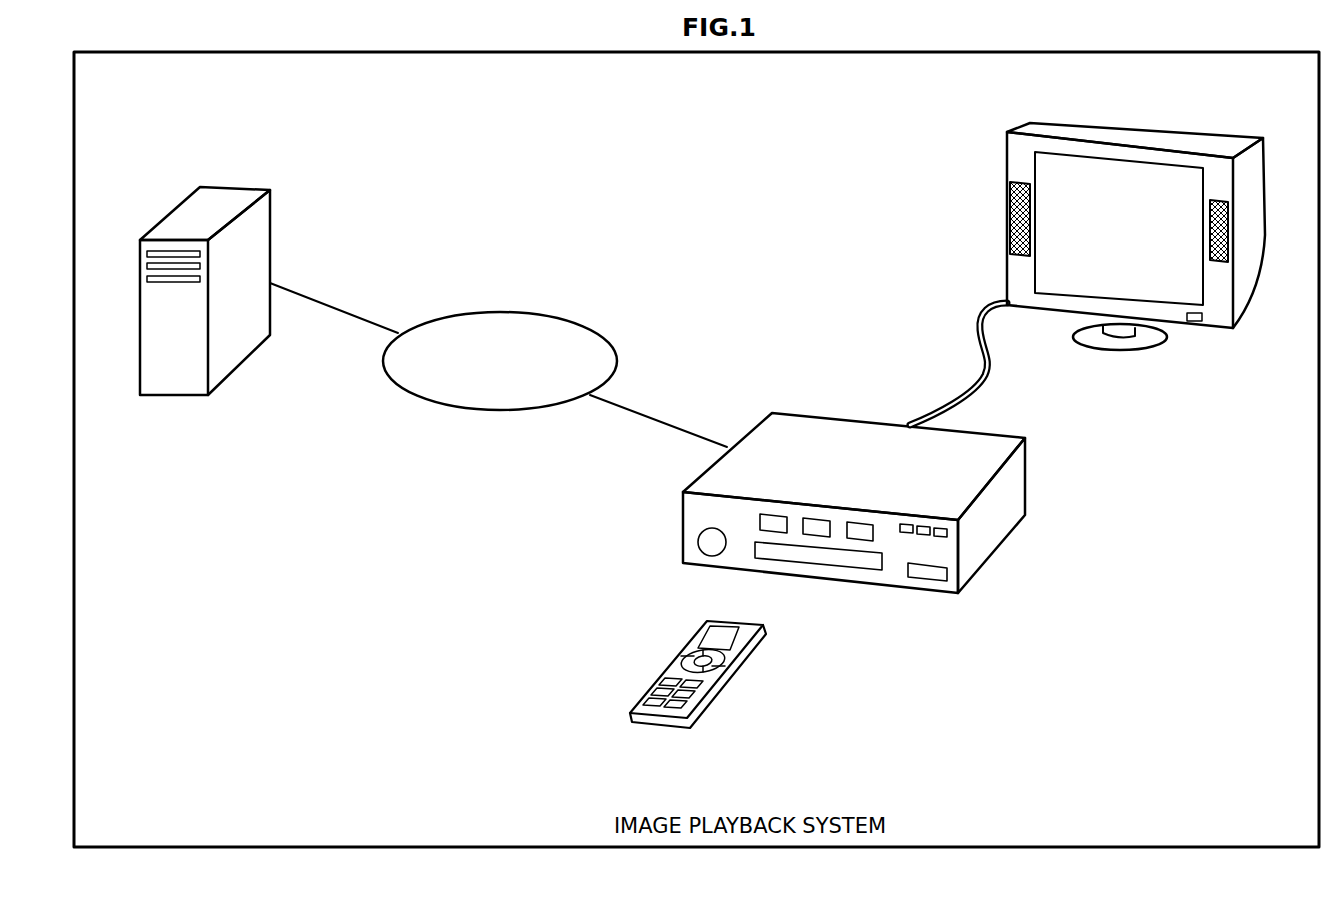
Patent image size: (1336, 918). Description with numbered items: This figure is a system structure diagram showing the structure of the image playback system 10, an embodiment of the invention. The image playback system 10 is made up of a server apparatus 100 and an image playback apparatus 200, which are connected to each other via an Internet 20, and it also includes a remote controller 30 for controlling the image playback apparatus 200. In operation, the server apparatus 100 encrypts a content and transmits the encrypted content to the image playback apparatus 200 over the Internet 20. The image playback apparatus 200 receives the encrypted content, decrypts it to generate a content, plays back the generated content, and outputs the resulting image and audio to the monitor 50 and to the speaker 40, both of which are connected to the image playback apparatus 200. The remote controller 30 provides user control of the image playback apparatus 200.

The image playback system 10 is at (955, 52).
The server apparatus 100 is at (250, 186).
The Internet 20 is at (578, 321).
The image playback apparatus 200 is at (856, 418).
The monitor 50 is at (1080, 133).
The speaker 40 is at (1010, 215).
The remote controller 30 is at (737, 682).